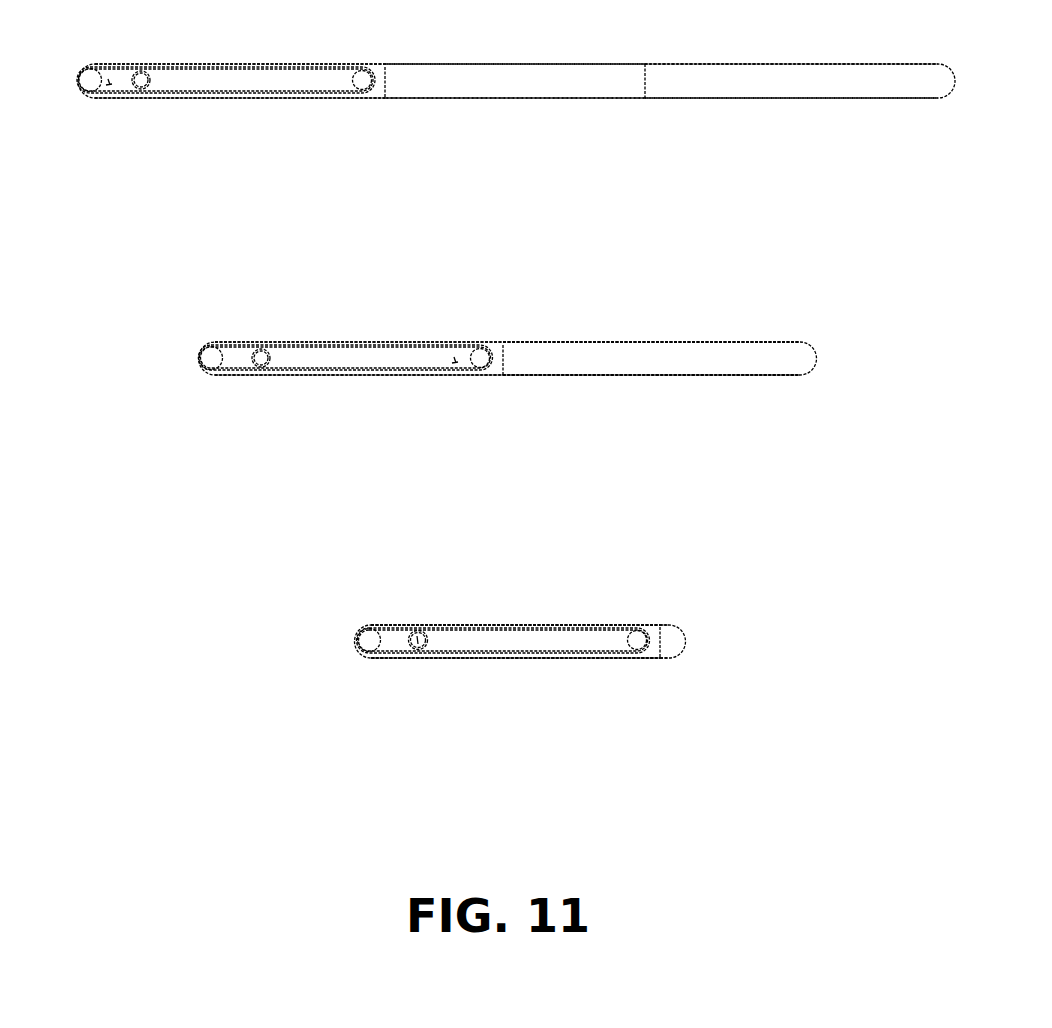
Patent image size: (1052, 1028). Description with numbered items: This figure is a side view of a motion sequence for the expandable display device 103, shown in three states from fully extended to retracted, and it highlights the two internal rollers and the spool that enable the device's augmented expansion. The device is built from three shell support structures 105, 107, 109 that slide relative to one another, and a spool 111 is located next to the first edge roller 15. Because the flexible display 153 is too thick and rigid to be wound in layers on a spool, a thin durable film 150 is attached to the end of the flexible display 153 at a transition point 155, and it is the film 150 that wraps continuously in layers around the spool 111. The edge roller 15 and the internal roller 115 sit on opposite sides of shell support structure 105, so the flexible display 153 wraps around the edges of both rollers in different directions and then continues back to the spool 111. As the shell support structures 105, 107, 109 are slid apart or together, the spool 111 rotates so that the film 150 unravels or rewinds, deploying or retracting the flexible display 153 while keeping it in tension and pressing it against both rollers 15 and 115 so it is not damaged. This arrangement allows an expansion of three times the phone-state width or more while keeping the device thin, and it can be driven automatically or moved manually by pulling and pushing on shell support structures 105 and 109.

The edge roller 15 is at (88, 68).
The expandable display device 103 is at (912, 72).
The shell support structure 105 is at (93, 98).
The shell support structure 107 is at (508, 97).
The shell support structure 109 is at (831, 99).
The spool 111 is at (140, 71).
The internal roller 115 is at (362, 70).
The durable film 150 is at (269, 94).
The flexible display 153 is at (78, 80).
The transition point 155 is at (113, 93).